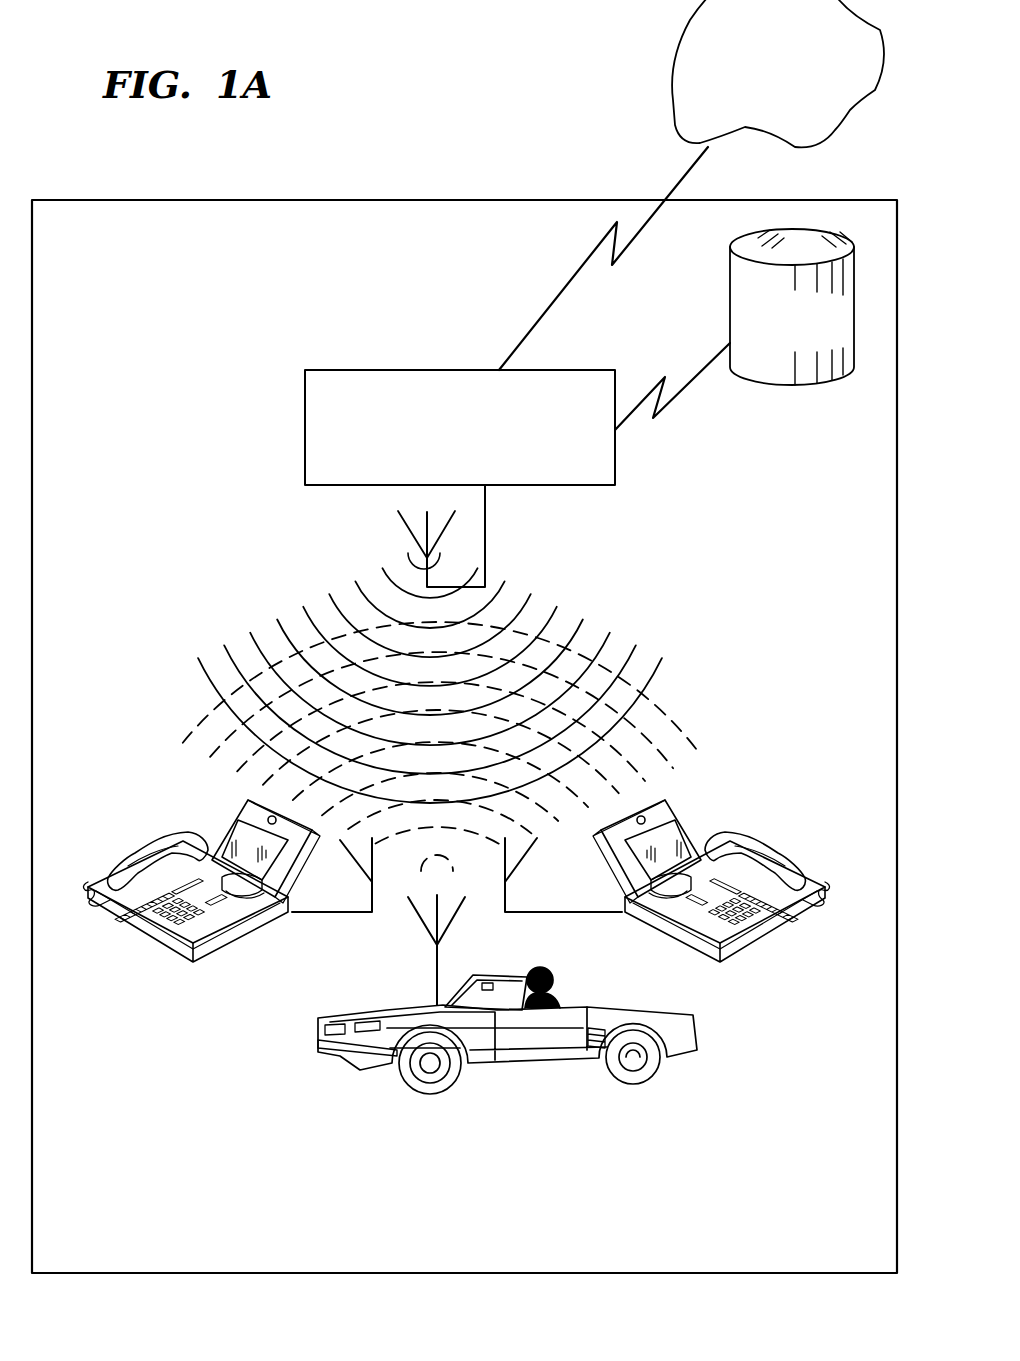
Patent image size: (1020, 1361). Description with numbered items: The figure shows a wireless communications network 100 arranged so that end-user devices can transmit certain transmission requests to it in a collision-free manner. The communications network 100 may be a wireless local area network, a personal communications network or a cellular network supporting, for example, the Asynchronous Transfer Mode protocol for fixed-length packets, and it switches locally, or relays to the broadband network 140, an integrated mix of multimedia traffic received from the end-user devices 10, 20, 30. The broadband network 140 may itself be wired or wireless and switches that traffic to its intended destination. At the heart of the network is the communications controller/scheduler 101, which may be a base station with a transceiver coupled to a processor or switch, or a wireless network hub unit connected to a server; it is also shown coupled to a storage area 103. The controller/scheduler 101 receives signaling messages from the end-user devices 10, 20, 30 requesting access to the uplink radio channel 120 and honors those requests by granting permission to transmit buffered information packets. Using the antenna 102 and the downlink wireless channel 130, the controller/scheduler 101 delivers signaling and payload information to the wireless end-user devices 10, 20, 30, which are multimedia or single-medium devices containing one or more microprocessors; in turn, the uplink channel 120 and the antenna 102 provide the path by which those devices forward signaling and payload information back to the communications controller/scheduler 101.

The communications network 100 is at (370, 201).
The communications controller/scheduler 101 is at (344, 369).
The antenna 102 is at (408, 528).
The storage area 103 is at (730, 302).
The broadband network 140 is at (673, 100).
The downlink wireless channel 130 is at (660, 662).
The uplink radio channel 120 is at (662, 752).
The end-user device 10 is at (161, 947).
The end-user device 30 is at (758, 840).
The end-user device 20 is at (578, 1000).